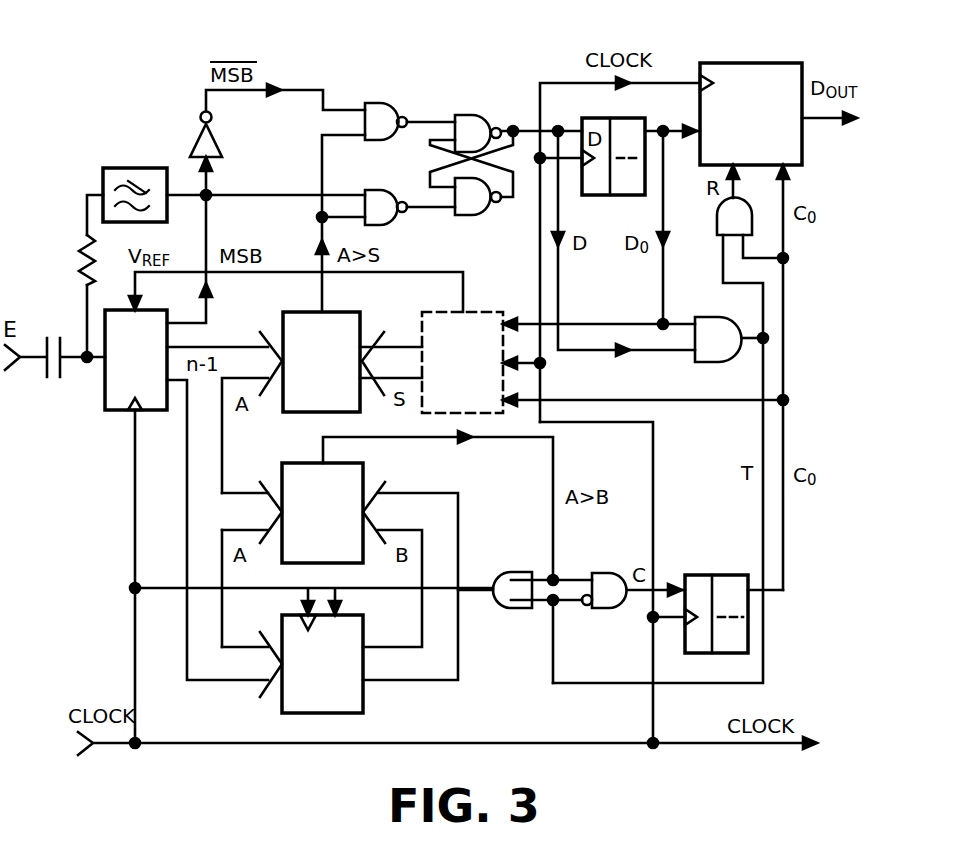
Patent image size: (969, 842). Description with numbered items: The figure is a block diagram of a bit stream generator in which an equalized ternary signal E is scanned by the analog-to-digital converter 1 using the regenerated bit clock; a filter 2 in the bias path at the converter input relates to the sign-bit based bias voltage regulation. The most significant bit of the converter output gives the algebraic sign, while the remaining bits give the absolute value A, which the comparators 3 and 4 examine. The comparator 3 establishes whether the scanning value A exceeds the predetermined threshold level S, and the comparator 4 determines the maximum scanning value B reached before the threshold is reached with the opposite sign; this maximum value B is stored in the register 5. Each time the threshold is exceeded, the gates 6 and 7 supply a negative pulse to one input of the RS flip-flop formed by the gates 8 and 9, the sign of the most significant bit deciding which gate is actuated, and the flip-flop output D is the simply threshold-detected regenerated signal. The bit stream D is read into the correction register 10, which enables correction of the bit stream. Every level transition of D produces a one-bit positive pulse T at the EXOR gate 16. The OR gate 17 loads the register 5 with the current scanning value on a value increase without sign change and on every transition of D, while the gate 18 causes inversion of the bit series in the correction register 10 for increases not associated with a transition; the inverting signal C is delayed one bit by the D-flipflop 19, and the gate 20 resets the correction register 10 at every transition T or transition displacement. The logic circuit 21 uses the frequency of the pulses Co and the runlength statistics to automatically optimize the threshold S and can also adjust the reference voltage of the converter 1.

The analog-to-digital converter 1 is at (117, 414).
The low-pass filter 2 is at (150, 168).
The comparator 3 is at (296, 318).
The comparator 4 is at (297, 466).
The register 5 is at (355, 702).
The gate 6 is at (370, 103).
The gate 7 is at (372, 190).
The gate 8 is at (470, 115).
The gate 9 is at (478, 216).
The correction register 10 is at (762, 62).
The EXOR gate 16 is at (701, 362).
The OR gate 17 is at (518, 612).
The gate 18 is at (612, 612).
The D-flipflop 19 is at (740, 575).
The gate 20 is at (713, 220).
The logic circuit 21 is at (480, 312).